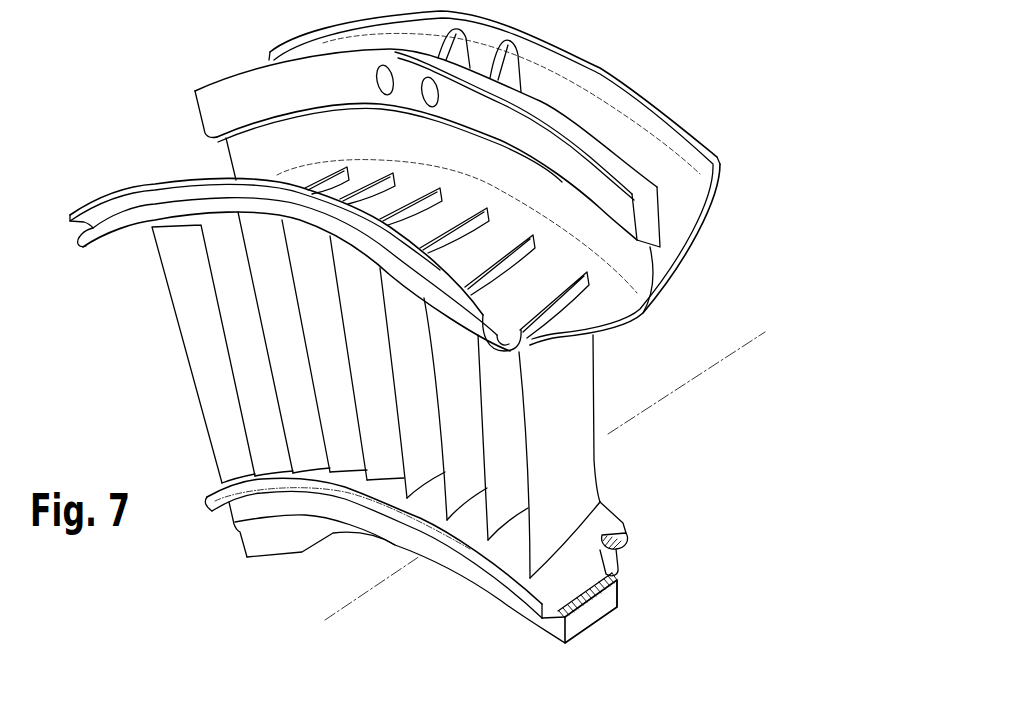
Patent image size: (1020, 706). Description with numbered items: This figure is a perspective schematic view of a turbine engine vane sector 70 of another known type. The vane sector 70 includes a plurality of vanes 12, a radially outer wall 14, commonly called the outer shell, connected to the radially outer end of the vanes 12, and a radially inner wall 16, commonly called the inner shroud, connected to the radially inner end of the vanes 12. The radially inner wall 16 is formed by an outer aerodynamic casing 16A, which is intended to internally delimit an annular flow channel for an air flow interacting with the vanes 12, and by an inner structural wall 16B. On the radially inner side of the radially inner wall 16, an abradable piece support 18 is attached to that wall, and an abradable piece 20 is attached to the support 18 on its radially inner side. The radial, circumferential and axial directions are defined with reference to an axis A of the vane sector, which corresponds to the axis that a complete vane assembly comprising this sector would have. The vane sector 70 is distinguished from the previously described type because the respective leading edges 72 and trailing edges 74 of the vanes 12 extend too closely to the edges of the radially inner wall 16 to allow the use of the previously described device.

The vane sector 70 is at (128, 166).
The vanes 12 is at (572, 394).
The radially outer wall 14 is at (609, 343).
The radially inner wall 16 is at (430, 593).
The outer aerodynamic casing 16A is at (612, 522).
The inner structural wall 16B is at (577, 584).
The abradable piece support 18 is at (617, 556).
The abradable piece 20 is at (620, 592).
The leading edges 72 is at (513, 553).
The trailing edges 74 is at (600, 453).
The axis A is at (723, 358).